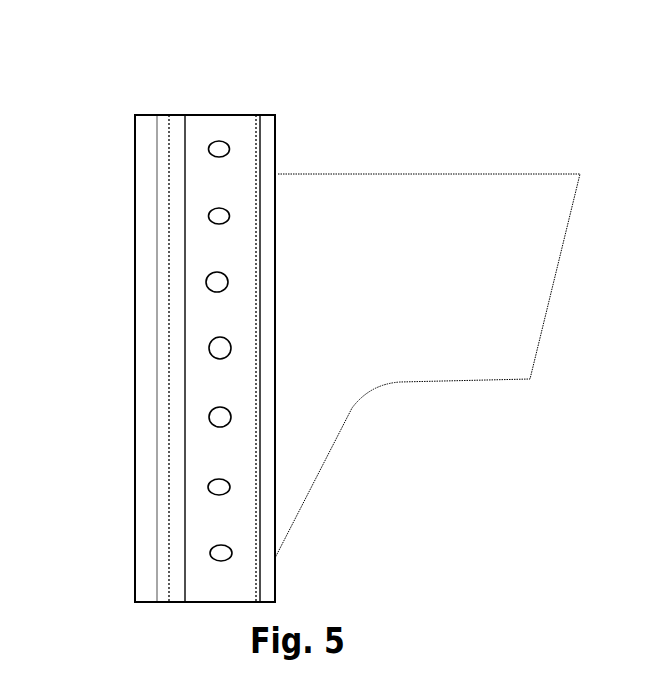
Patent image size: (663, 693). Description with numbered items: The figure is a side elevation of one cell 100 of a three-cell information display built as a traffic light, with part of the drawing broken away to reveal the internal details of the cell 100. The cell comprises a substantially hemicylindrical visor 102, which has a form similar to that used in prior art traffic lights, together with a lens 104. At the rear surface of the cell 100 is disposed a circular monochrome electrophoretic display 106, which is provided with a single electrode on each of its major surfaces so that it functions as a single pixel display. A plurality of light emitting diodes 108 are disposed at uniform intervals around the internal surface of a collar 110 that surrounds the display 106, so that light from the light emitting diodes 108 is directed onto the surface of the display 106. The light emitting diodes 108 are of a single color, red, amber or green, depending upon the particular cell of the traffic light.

The cell 100 is at (210, 53).
The visor 102 is at (433, 271).
The lens 104 is at (263, 160).
The electrophoretic display 106 is at (160, 195).
The light emitting diodes 108 is at (212, 283).
The collar 110 is at (208, 387).